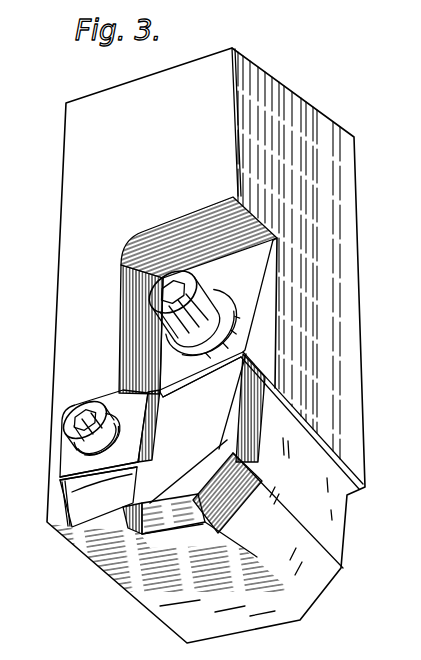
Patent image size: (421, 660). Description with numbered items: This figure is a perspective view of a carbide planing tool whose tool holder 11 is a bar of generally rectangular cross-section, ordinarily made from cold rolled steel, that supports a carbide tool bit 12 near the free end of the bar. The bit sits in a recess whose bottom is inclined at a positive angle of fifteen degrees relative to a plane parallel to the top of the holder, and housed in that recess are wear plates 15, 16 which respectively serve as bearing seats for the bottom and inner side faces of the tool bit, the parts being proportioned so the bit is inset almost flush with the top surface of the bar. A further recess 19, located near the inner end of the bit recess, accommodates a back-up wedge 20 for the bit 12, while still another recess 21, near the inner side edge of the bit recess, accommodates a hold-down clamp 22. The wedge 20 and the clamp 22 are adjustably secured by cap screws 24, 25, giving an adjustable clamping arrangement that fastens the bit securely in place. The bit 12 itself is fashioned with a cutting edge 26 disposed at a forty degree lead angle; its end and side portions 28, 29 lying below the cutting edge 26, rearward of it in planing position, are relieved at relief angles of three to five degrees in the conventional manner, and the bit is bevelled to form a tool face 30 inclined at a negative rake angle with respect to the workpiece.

The tool holder 11 is at (266, 96).
The carbide tool bit 12 is at (215, 404).
The wear plate 15 is at (262, 456).
The wear plate 16 is at (128, 496).
The recess 19 is at (176, 230).
The back-up wedge 20 is at (262, 312).
The recess 21 is at (106, 385).
The hold-down clamp 22 is at (72, 467).
The cap screw 24 is at (215, 300).
The cap screw 25 is at (70, 436).
The cutting edge 26 is at (200, 473).
The end portion of the bit 28 is at (174, 511).
The side portion of the bit 29 is at (240, 500).
The tool face 30 is at (223, 443).